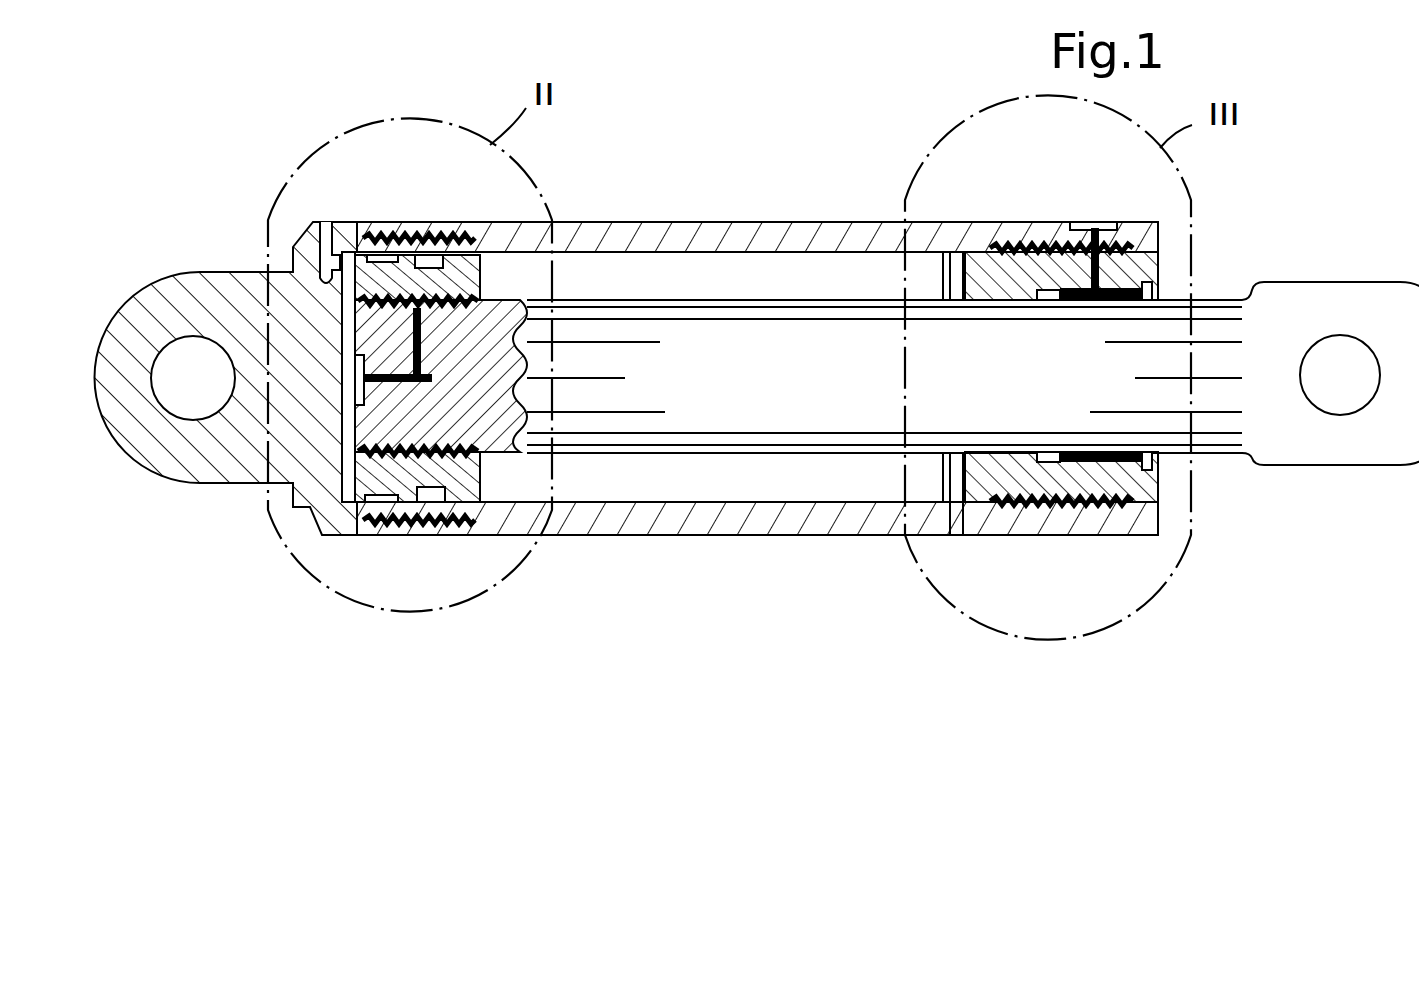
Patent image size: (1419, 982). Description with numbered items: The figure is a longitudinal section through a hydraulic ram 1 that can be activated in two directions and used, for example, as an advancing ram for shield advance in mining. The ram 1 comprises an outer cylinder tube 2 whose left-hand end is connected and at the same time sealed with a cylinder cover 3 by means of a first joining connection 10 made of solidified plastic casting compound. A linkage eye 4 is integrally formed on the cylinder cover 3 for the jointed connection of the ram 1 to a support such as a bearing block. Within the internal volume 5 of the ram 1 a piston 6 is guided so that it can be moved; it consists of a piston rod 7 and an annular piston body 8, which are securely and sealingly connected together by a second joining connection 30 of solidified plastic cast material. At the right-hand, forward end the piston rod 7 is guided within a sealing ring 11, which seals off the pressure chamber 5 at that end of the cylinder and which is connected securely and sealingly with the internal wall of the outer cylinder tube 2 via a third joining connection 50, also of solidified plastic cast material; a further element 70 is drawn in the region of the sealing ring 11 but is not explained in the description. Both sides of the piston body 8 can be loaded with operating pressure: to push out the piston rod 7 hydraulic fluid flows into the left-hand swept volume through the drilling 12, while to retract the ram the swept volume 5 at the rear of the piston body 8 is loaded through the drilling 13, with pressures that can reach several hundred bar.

The hydraulic ram 1 is at (752, 165).
The outer cylinder tube 2 is at (800, 226).
The cylinder cover 3 is at (203, 292).
The linkage eye 4 is at (193, 400).
The internal volume 5 is at (716, 292).
The piston 6 is at (582, 262).
The piston rod 7 is at (778, 420).
The annular piston body 8 is at (485, 472).
The first joining connection 10 is at (428, 545).
The sealing ring 11 is at (1128, 480).
The drilling 12 is at (325, 224).
The drilling 13 is at (958, 535).
The second joining connection 30 is at (490, 276).
The third joining connection 50 is at (1050, 537).
The rod seal 70 is at (1128, 300).